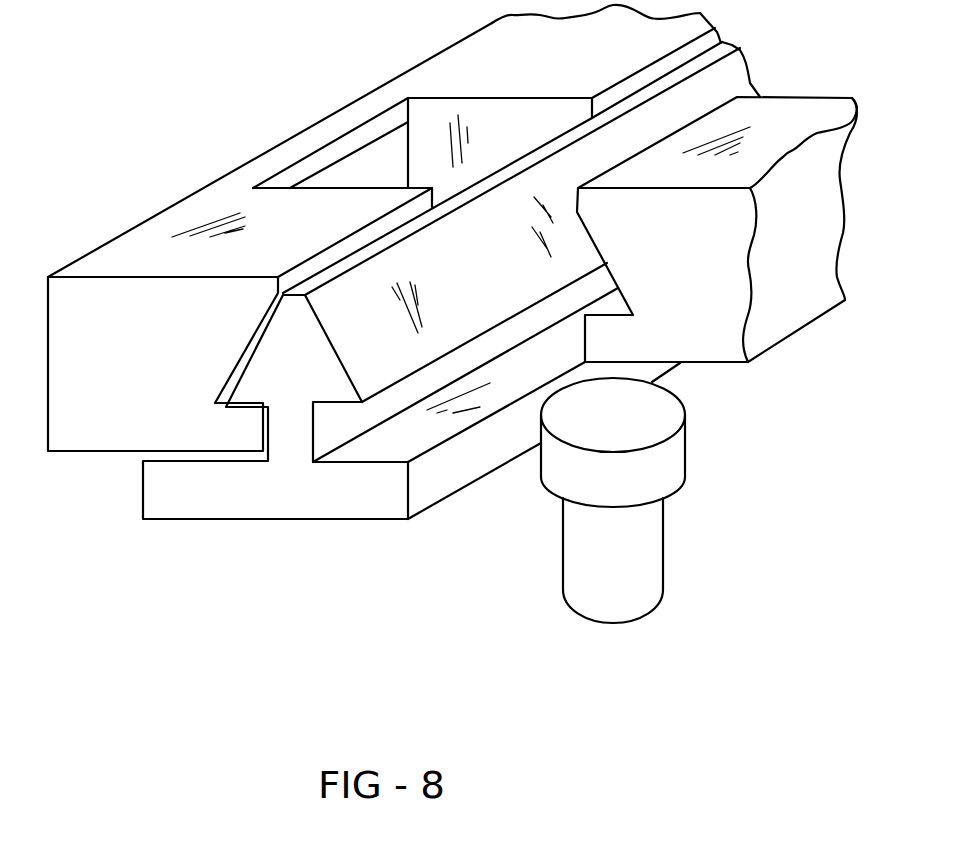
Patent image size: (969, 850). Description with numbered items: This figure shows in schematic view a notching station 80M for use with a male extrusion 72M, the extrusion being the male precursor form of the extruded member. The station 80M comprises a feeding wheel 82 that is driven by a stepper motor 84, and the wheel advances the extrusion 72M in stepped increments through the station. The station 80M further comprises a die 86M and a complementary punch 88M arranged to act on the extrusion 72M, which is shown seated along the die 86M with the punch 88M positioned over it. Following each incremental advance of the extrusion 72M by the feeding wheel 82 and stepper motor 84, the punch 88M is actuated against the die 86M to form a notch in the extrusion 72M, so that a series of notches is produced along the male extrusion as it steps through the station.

The notching station 80M is at (321, 121).
The die 86M is at (217, 202).
The male precursor extrusion 72M is at (288, 495).
The punch 88M is at (717, 229).
The feeding wheel 82 is at (664, 413).
The stepper motor 84 is at (645, 570).